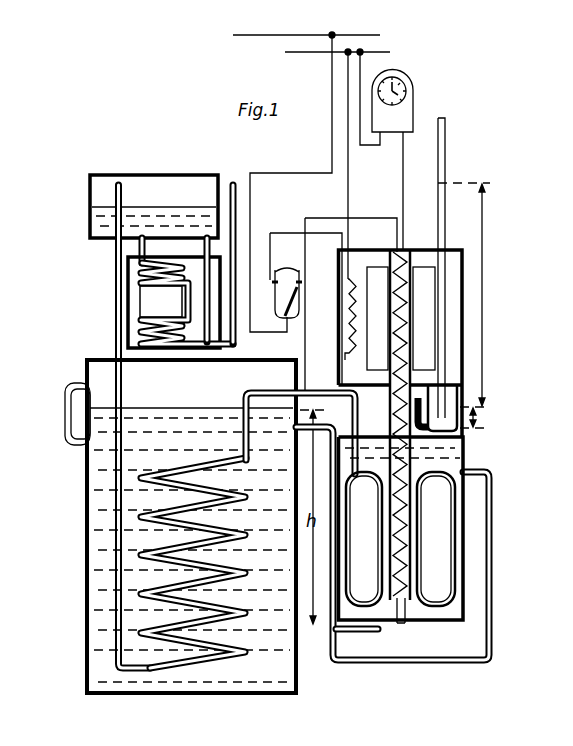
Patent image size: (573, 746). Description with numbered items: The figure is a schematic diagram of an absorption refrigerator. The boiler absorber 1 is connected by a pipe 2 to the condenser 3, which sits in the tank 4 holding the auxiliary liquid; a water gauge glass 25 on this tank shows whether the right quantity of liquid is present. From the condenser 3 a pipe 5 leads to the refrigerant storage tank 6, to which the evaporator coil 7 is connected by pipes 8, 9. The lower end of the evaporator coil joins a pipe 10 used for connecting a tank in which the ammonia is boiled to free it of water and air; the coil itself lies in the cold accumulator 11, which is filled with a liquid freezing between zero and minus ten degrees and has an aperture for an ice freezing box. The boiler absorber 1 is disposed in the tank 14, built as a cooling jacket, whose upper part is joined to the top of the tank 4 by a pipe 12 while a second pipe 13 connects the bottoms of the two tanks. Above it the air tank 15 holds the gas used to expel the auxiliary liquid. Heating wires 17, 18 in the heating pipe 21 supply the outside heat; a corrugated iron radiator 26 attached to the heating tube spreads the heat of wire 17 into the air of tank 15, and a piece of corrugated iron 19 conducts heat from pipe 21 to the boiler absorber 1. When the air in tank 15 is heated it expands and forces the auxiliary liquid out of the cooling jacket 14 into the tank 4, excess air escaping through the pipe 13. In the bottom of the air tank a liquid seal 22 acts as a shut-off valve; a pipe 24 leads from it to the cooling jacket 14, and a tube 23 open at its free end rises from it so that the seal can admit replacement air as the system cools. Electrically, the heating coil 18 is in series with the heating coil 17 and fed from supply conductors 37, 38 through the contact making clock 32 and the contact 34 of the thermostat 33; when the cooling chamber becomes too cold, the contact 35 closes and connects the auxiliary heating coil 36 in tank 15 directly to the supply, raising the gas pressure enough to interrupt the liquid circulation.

The boiler absorber 1 is at (457, 546).
The pipe 2 is at (308, 393).
The condenser 3 is at (140, 522).
The tank for the auxiliary liquid 4 is at (98, 586).
The pipe 5 is at (128, 292).
The refrigerant storage tank 6 is at (92, 202).
The evaporator coil 7 is at (142, 330).
The pipe 8 is at (140, 247).
The pipe 9 is at (210, 251).
The pipe 10 is at (236, 290).
The cold accumulator 11 is at (222, 317).
The pipe 12 is at (434, 661).
The pipe 13 is at (360, 639).
The tank (cooling jacket) 14 is at (462, 508).
The air tank 15 is at (464, 334).
The heating wire 17 is at (390, 300).
The heating wire 18 is at (383, 520).
The piece of corrugated iron 19 is at (440, 582).
The heating pipe 21 is at (393, 256).
The liquid seal 22 is at (457, 416).
The tube 23 is at (447, 160).
The pipe 24 is at (428, 421).
The water gauge glass 25 is at (66, 412).
The corrugated iron radiator 26 is at (372, 276).
The time switch (contact making clock) 32 is at (414, 104).
The thermostat 33 is at (324, 296).
The contact 34 is at (296, 276).
The contact 35 is at (278, 276).
The auxiliary heating coil 36 is at (352, 337).
The conductor 37 is at (271, 36).
The conductor 38 is at (285, 52).